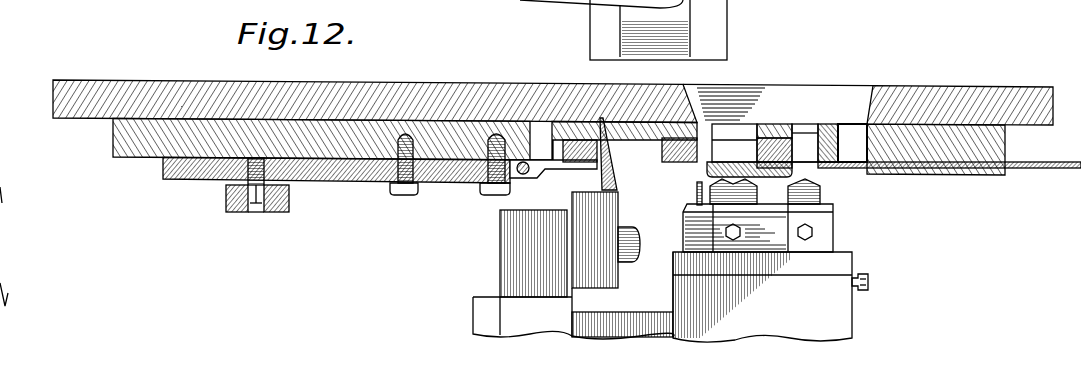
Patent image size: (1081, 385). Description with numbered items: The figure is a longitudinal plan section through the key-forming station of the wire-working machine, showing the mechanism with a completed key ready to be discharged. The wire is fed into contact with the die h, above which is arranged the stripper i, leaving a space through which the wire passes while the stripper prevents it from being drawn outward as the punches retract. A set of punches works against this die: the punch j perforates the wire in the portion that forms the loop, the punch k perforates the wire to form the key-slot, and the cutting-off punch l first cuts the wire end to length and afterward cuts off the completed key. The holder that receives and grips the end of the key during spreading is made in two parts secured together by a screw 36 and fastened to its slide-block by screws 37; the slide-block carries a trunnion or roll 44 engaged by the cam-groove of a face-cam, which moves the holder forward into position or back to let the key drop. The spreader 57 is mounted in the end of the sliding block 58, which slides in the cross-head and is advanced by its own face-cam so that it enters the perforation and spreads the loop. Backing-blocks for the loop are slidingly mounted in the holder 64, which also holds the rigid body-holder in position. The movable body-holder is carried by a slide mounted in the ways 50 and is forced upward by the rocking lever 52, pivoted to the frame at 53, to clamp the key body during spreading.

The holder 64 is at (452, 139).
The trunnion or roll 44 is at (290, 206).
The screws 37 is at (489, 197).
The screw 36 is at (525, 176).
The sliding block 58 is at (598, 183).
The spreader 57 is at (608, 135).
The die h is at (769, 150).
The stripper i is at (838, 172).
The punch j is at (757, 195).
The punch k is at (820, 195).
The cutting-off punch l is at (697, 194).
The ways 50 is at (658, 30).
The rocking lever 52 is at (575, 3).
The pivot 53 is at (480, 0).